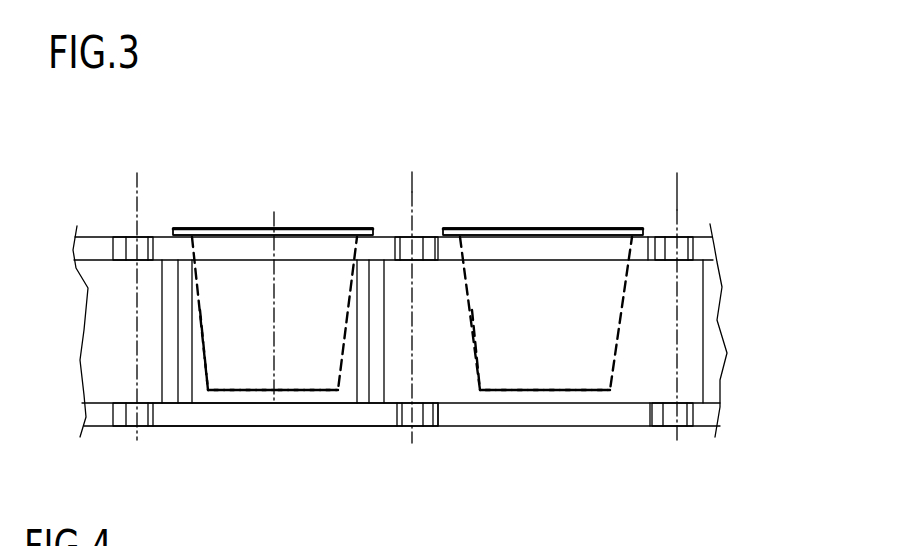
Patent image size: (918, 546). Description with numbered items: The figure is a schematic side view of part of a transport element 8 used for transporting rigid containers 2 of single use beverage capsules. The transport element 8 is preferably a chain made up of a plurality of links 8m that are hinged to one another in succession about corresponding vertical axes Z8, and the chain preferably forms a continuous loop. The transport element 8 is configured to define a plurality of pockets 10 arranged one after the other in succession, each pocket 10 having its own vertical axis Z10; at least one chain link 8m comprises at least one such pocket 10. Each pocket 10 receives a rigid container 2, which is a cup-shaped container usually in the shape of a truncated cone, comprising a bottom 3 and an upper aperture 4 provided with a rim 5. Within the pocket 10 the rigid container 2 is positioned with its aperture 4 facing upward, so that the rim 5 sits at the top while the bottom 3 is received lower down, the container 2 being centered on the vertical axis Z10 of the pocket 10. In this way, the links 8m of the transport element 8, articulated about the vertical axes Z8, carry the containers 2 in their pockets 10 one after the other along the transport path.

The rigid container 2 is at (202, 325).
The bottom 3 is at (327, 368).
The upper aperture 4 is at (270, 228).
The rim 5 is at (183, 228).
The transport element 8 is at (445, 445).
The chain link 8m is at (119, 420).
The pocket 10 is at (210, 393).
The vertical axis of chain link hinge Z8 is at (411, 192).
The vertical axis of pocket Z10 is at (275, 288).